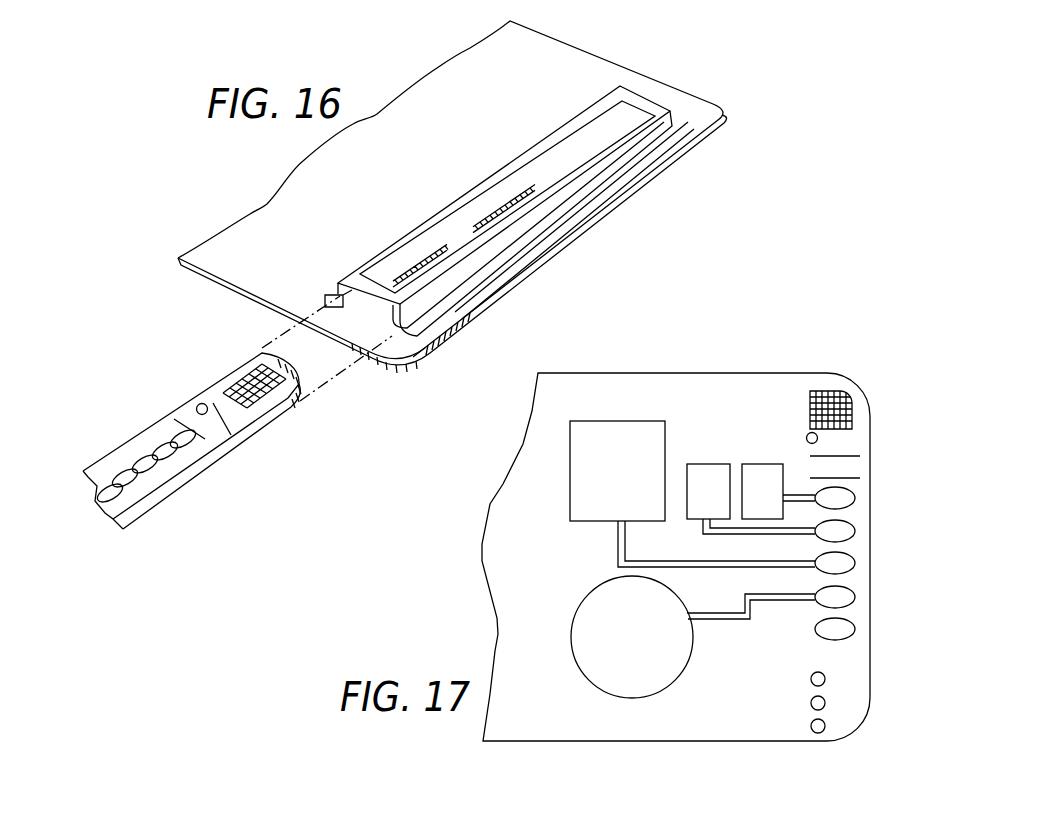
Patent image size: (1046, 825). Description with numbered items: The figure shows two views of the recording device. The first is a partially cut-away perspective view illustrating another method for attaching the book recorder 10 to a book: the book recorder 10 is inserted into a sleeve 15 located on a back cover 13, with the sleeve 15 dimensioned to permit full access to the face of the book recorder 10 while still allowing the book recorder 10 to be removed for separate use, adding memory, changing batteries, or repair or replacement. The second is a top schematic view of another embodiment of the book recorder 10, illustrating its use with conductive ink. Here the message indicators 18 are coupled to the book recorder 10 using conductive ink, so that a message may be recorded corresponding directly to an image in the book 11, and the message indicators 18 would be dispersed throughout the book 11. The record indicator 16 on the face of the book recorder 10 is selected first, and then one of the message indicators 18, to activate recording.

In FIG. 17, the book recorder 10 is at (797, 350).
In FIG. 17, the book 11 is at (712, 407).
In FIG. 16, the back cover 13 is at (583, 63).
In FIG. 16, the sleeve 15 is at (647, 98).
In FIG. 17, the record indicator 16 is at (818, 437).
In FIG. 17, the message indicators 18 is at (617, 438).